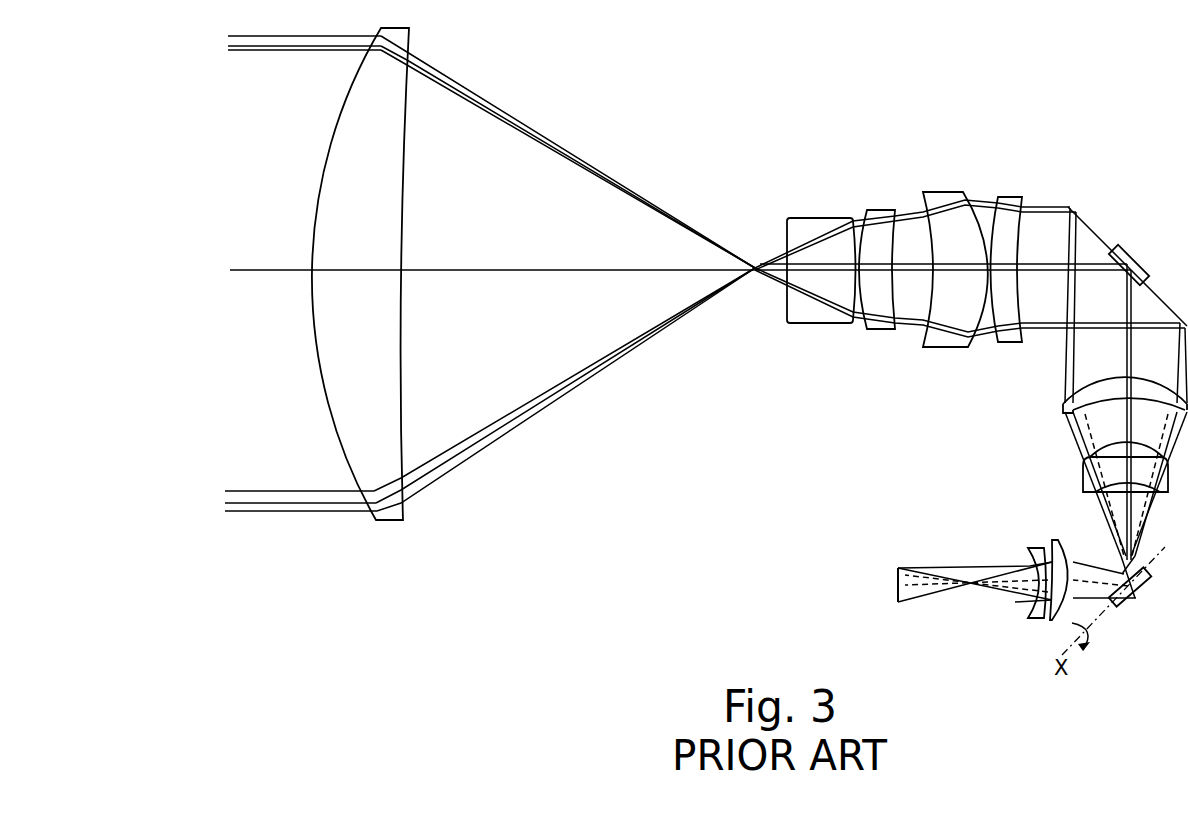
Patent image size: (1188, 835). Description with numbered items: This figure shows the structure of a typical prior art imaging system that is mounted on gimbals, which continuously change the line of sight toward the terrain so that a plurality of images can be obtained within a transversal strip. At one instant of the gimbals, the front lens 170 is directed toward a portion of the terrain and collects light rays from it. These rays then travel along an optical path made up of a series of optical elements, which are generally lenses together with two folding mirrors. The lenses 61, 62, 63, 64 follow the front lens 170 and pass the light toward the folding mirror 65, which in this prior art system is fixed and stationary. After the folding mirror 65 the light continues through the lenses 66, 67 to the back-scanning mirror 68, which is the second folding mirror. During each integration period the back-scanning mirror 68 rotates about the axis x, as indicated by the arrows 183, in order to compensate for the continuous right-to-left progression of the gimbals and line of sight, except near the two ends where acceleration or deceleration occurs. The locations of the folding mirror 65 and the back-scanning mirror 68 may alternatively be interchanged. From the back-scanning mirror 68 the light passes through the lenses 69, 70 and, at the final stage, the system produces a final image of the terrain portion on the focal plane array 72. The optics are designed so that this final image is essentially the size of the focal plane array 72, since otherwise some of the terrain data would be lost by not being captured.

The front lens 170 is at (322, 152).
The lens 61 is at (810, 215).
The lens 62 is at (880, 208).
The lens 63 is at (948, 190).
The lens 64 is at (1015, 196).
The folding mirror 65 is at (1133, 250).
The lens 66 is at (1062, 408).
The lens 67 is at (1080, 476).
The back-scanning mirror 68 is at (1138, 593).
The lens 69 is at (1050, 622).
The lens 70 is at (1025, 616).
The focal plane array 72 is at (895, 580).
The arrows 183 is at (1091, 628).